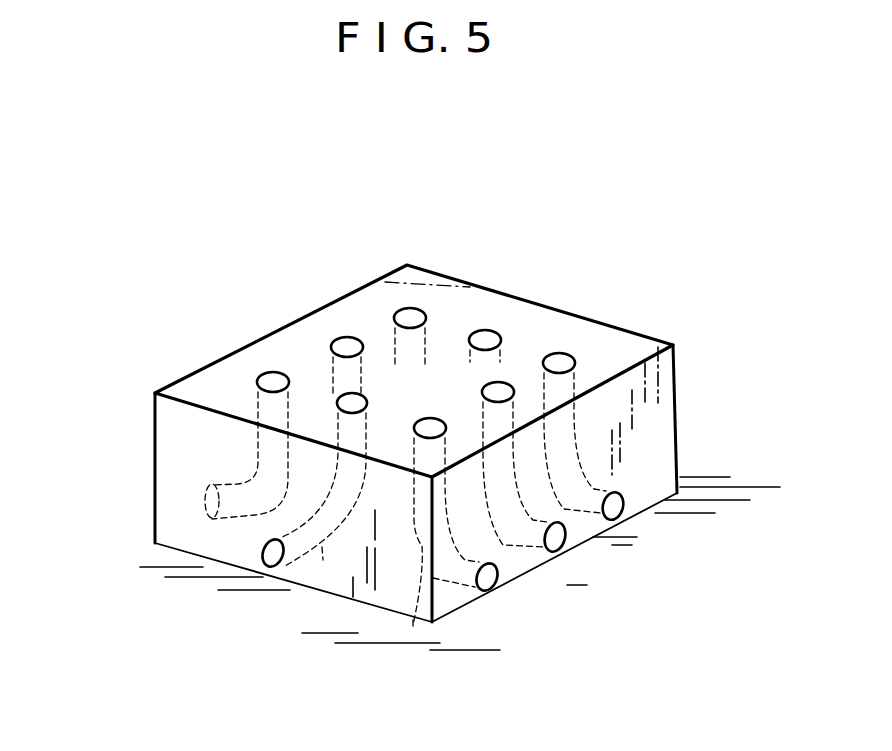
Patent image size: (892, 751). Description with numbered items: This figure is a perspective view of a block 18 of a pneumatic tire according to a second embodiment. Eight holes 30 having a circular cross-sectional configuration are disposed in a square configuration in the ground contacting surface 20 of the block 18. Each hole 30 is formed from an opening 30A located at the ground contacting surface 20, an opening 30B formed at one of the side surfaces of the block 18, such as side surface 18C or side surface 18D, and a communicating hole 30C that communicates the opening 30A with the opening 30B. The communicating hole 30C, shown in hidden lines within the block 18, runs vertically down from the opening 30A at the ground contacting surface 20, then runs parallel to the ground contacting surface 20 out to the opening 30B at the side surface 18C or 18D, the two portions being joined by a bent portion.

The block 18 is at (285, 250).
The side surface 18C is at (165, 441).
The side surface 18D is at (665, 442).
The ground contacting surface 20 is at (510, 312).
The hole 30 is at (386, 315).
The opening 30A is at (427, 427).
The opening 30B is at (263, 563).
The communicating hole 30C is at (322, 547).